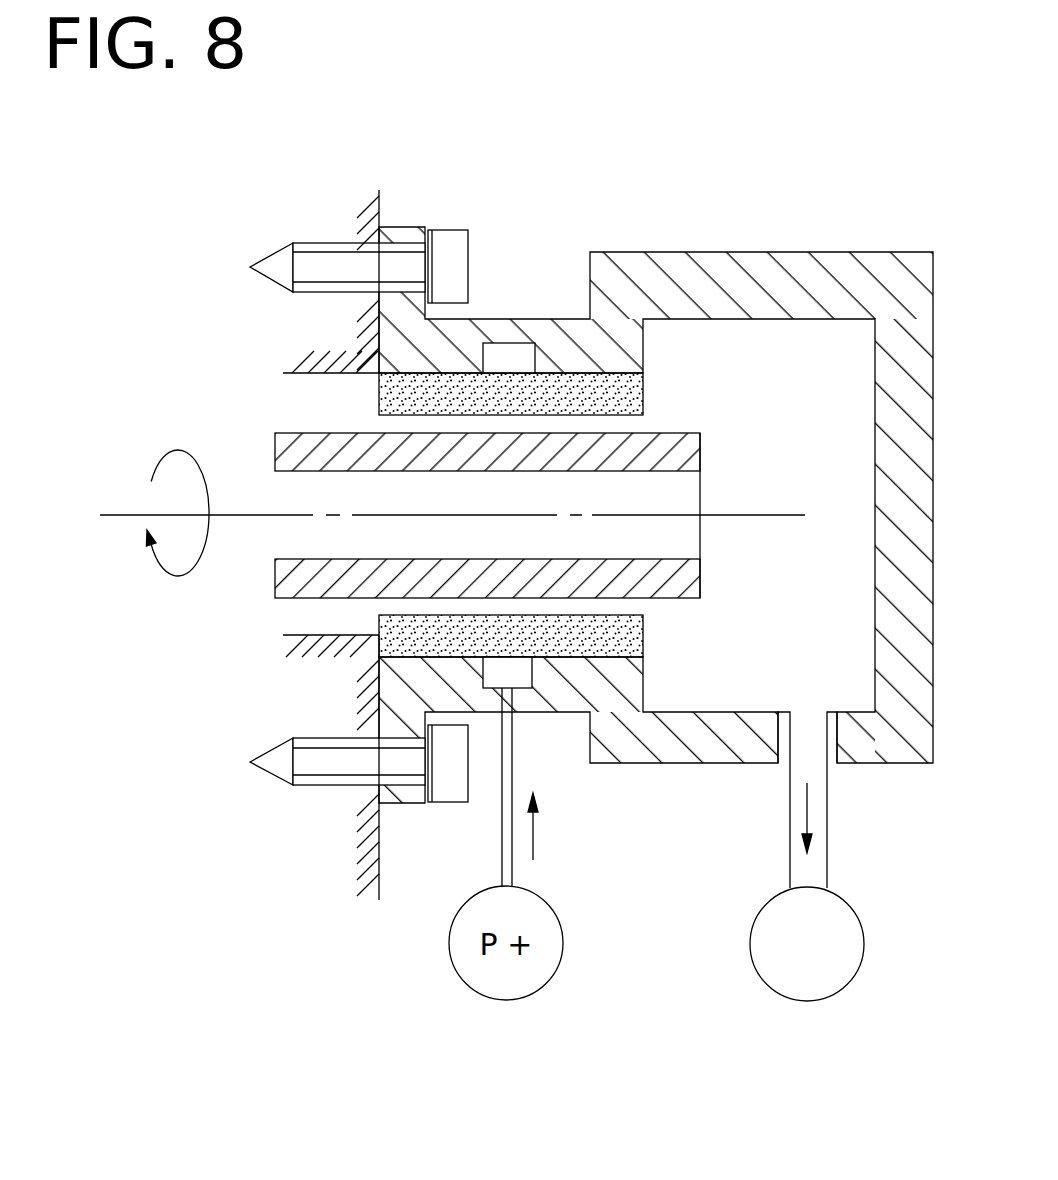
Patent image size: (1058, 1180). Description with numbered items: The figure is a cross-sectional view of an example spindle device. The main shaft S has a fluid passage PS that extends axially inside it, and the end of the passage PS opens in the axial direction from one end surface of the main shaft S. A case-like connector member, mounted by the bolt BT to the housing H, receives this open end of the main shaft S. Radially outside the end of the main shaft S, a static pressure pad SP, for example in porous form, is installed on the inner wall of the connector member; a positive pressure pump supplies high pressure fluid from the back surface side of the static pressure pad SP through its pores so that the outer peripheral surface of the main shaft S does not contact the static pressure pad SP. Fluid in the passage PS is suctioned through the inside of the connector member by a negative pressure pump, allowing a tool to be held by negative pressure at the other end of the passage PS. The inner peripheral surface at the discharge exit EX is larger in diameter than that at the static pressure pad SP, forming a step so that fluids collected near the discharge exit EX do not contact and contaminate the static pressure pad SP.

The housing H is at (379, 212).
The bolt BT is at (450, 268).
The static pressure pad SP is at (625, 393).
The main shaft S is at (701, 452).
The fluid passage PS is at (658, 471).
The discharge exit EX is at (820, 793).